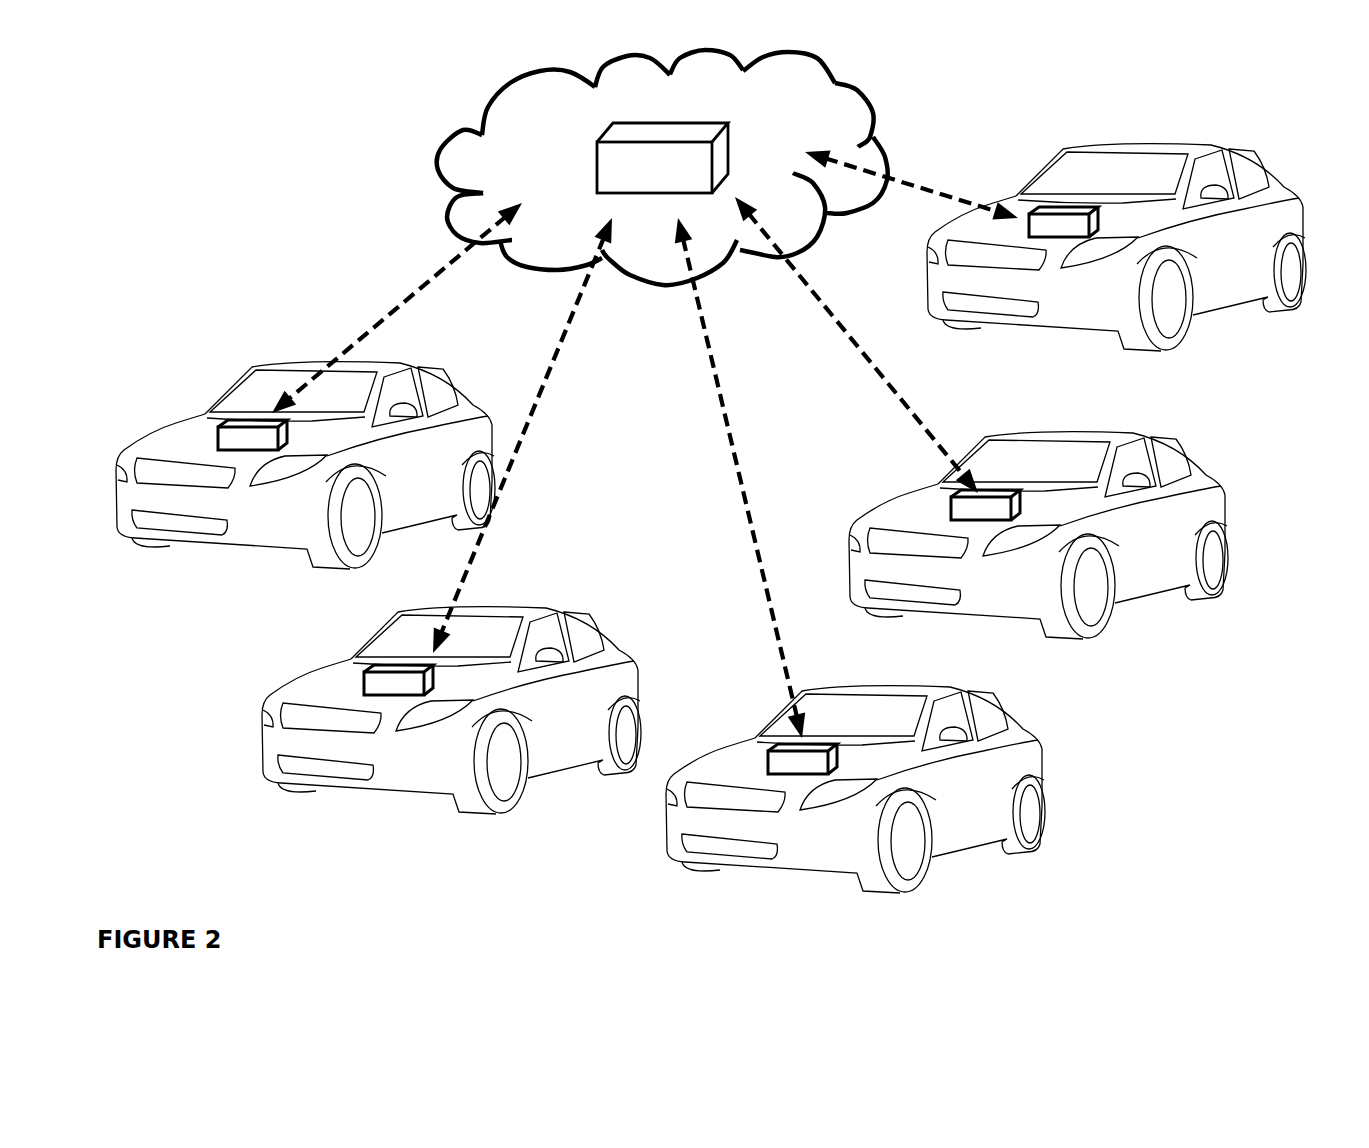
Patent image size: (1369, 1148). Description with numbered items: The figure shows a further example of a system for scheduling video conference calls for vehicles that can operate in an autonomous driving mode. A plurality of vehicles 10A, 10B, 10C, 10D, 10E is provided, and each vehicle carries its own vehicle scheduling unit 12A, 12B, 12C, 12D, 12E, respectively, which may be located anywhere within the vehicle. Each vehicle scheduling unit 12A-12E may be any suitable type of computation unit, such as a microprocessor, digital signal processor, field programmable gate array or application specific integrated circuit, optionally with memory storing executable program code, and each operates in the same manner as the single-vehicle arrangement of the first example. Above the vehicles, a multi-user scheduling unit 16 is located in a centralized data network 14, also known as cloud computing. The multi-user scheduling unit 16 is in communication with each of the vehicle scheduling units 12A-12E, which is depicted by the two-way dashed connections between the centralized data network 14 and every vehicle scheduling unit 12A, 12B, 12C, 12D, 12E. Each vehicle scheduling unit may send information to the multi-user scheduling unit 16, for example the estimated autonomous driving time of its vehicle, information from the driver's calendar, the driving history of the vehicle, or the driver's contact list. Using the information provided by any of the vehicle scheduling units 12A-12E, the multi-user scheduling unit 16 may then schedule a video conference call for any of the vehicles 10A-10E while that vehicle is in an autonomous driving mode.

The vehicle 10A is at (177, 537).
The vehicle 10B is at (325, 782).
The vehicle 10C is at (758, 868).
The vehicle 10D is at (957, 615).
The vehicle 10E is at (987, 325).
The vehicle scheduling unit 12A is at (280, 445).
The vehicle scheduling unit 12B is at (428, 688).
The vehicle scheduling unit 12C is at (830, 768).
The vehicle scheduling unit 12D is at (1013, 514).
The vehicle scheduling unit 12E is at (1091, 232).
The centralized data network 14 is at (877, 125).
The multi-user scheduling unit 16 is at (690, 128).